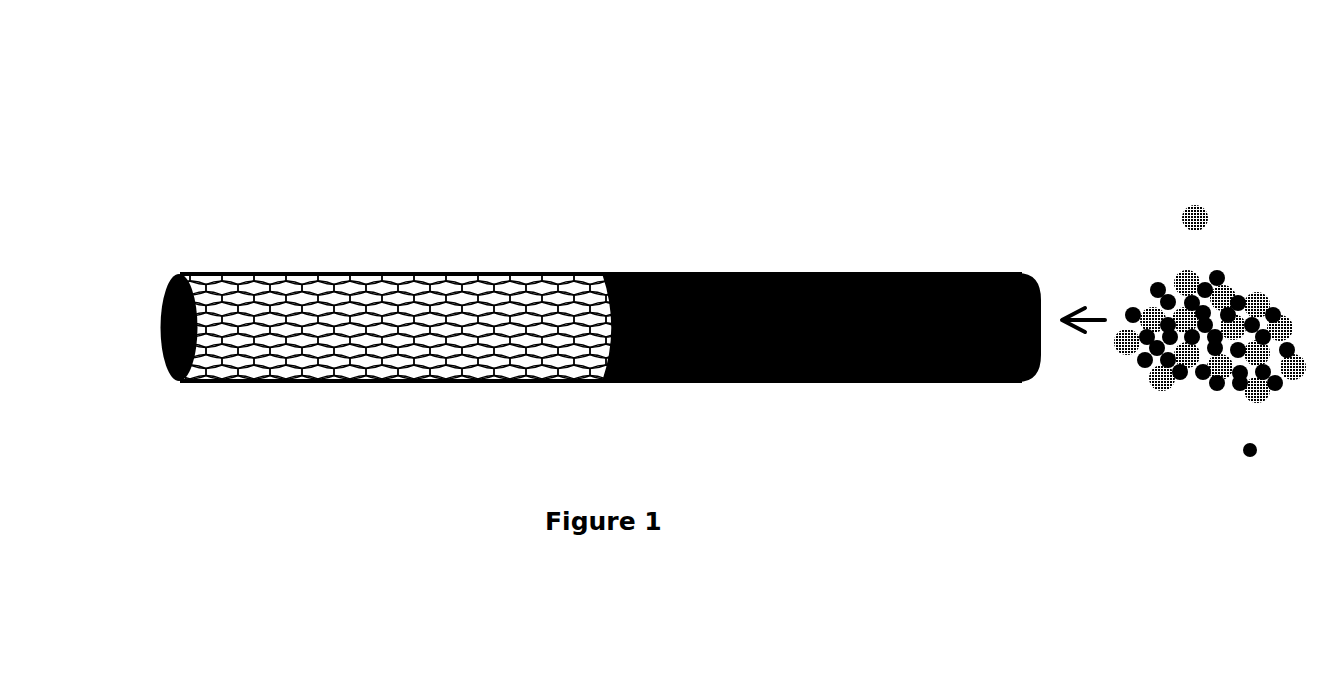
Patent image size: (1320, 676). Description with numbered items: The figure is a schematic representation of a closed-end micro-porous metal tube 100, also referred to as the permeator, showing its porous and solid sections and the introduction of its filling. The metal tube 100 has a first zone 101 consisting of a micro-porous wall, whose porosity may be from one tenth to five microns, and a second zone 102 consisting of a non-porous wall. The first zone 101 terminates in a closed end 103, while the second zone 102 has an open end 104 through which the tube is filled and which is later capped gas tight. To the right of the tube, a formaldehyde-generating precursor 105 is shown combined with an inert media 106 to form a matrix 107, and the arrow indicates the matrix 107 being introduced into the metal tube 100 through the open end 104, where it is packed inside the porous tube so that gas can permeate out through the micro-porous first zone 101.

The micro-porous metal tube 100 is at (588, 202).
The first zone 101 is at (323, 248).
The second zone 102 is at (928, 247).
The closed end 103 is at (156, 350).
The open end 104 is at (1020, 353).
The formaldehyde-generating precursor 105 is at (1183, 194).
The inert media 106 is at (1235, 463).
The matrix 107 is at (1245, 278).